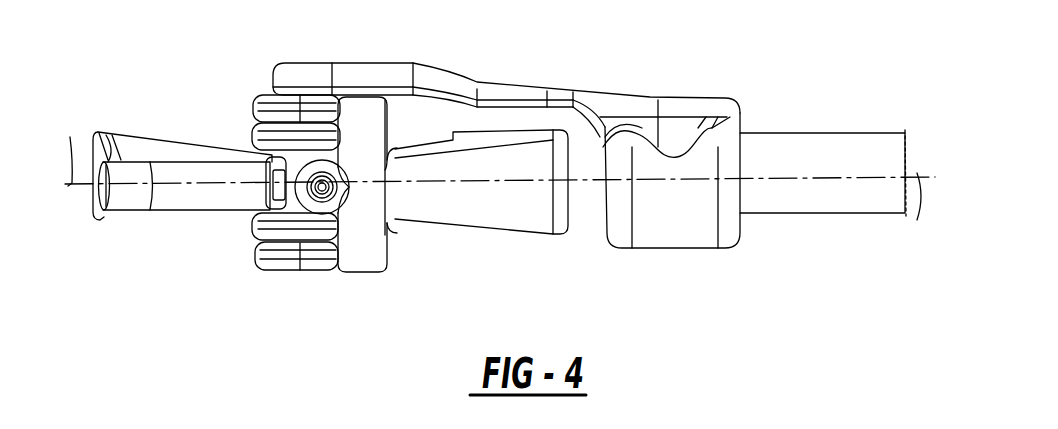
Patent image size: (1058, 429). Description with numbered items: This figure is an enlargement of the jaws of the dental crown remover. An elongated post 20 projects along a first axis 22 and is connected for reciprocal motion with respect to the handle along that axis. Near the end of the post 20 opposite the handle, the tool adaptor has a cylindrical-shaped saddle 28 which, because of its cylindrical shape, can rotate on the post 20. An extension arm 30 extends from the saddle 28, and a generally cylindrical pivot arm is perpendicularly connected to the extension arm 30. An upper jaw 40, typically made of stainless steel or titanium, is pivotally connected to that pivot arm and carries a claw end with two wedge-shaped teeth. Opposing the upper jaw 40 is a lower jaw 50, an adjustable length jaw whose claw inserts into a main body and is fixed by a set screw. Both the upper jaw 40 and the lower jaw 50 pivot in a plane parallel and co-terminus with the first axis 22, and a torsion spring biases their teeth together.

The post 20 is at (822, 133).
The first axis 22 is at (76, 123).
The saddle 28 is at (643, 97).
The extension arm 30 is at (492, 97).
The upper jaw 40 is at (157, 150).
The lower jaw 50 is at (180, 207).